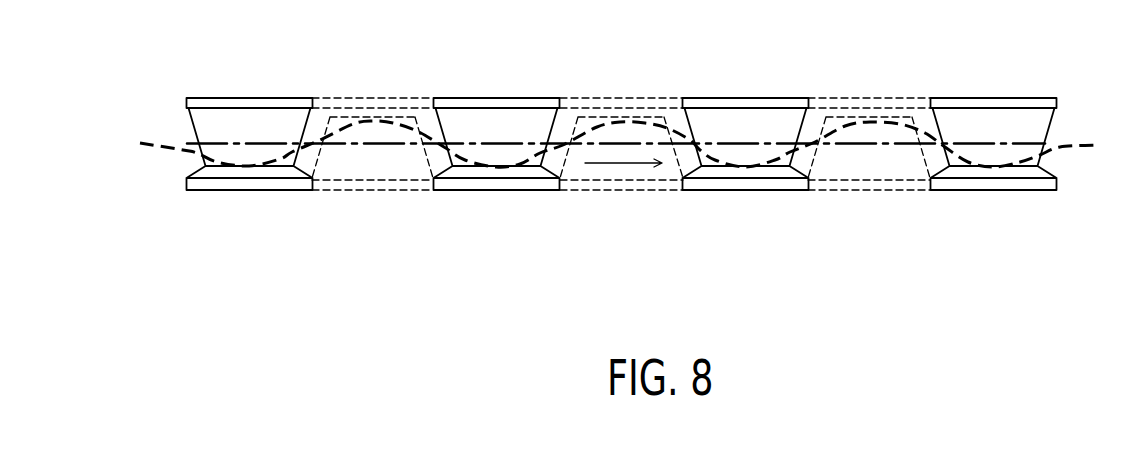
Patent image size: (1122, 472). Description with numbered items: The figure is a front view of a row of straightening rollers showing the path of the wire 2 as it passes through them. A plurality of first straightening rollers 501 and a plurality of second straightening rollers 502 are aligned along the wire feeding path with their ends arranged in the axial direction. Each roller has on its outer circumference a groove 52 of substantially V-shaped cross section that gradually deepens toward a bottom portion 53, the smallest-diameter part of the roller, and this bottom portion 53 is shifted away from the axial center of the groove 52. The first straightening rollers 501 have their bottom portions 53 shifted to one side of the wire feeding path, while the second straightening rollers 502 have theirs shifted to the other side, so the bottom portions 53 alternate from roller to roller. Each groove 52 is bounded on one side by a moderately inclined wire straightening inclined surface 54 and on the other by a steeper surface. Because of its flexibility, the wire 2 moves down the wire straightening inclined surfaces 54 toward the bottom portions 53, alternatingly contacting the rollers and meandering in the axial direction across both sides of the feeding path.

The wire 2 is at (175, 140).
The first straightening roller 501 is at (255, 102).
The second straightening roller 502 is at (353, 190).
The groove 52 is at (397, 165).
The bottom portion 53 is at (400, 118).
The wire straightening inclined surface 54 is at (350, 118).